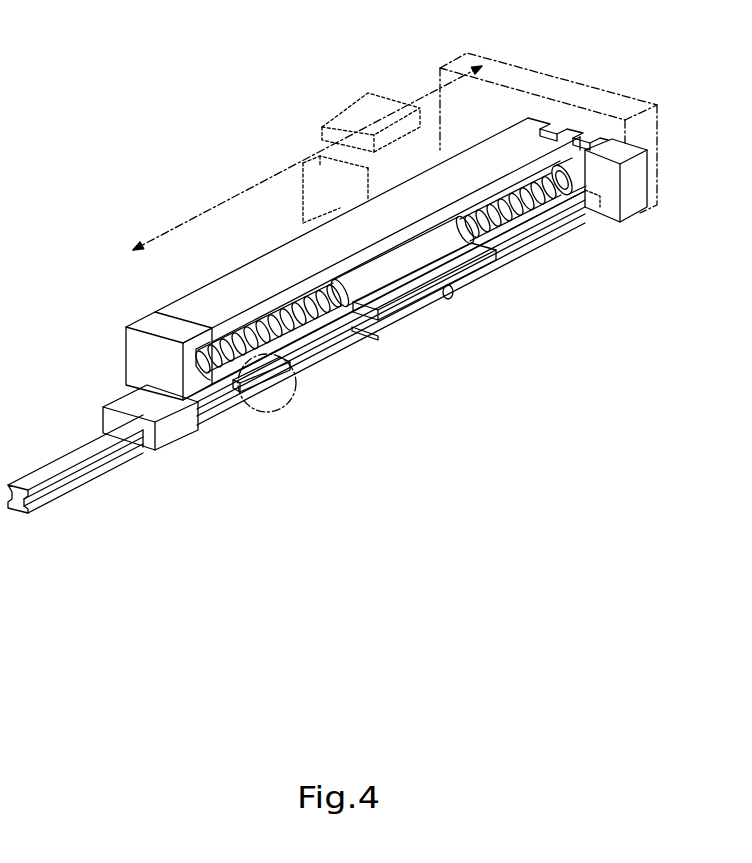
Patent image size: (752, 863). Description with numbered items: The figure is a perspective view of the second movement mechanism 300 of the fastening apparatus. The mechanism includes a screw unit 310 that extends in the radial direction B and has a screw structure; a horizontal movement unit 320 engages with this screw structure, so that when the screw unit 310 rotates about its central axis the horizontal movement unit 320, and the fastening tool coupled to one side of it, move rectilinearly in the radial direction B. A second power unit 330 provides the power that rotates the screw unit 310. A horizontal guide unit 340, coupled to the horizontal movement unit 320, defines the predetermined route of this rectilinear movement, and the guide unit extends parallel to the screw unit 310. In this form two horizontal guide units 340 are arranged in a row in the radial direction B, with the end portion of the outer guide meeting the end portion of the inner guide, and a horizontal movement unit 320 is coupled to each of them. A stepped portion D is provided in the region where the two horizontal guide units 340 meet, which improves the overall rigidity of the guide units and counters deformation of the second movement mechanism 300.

The second movement mechanism 300 is at (50, 45).
The screw unit 310 is at (522, 200).
The horizontal movement unit 320 is at (430, 248).
The second power unit 330 is at (357, 118).
The horizontal guide unit 340 is at (324, 345).
The radial direction B is at (300, 162).
The stepped portion D is at (296, 398).